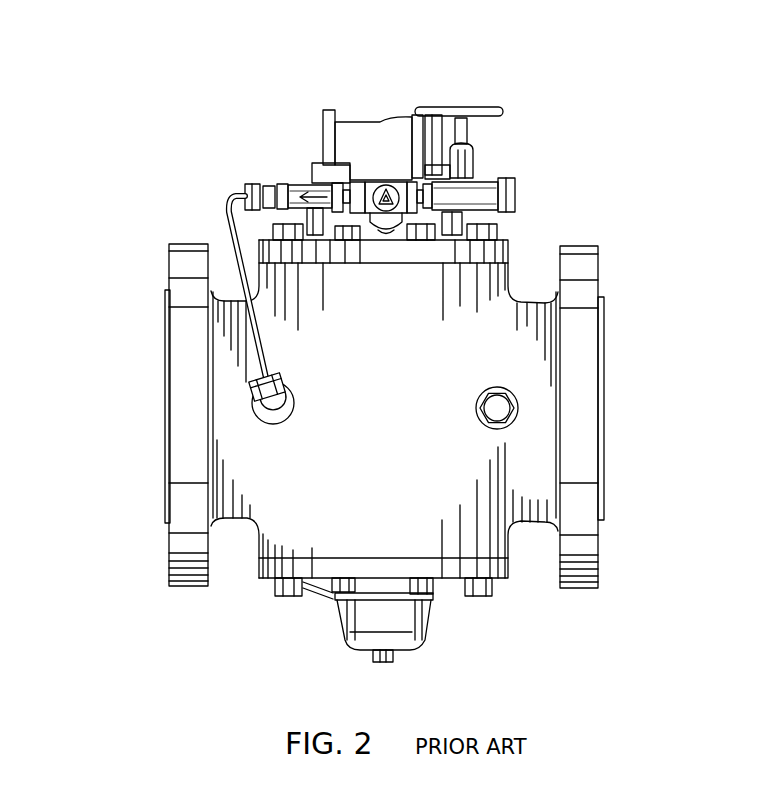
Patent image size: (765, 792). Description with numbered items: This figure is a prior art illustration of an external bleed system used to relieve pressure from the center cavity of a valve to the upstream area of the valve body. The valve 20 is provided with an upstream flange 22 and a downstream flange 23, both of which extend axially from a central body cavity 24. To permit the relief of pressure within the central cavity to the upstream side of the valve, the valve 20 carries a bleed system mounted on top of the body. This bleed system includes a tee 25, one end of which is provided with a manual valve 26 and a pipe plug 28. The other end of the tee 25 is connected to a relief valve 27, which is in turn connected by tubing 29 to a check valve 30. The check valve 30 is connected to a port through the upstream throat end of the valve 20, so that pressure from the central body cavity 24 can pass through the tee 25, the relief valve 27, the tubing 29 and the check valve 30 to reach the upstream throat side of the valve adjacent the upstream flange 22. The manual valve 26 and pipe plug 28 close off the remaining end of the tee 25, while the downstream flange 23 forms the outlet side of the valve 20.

The valve 20 is at (145, 297).
The upstream flange 22 is at (193, 498).
The downstream flange 23 is at (570, 560).
The central body cavity 24 is at (384, 443).
The tee 25 is at (370, 185).
The manual valve 26 is at (473, 148).
The relief valve 27 is at (297, 185).
The pipe plug 28 is at (517, 197).
The tubing 29 is at (222, 216).
The check valve 30 is at (278, 412).